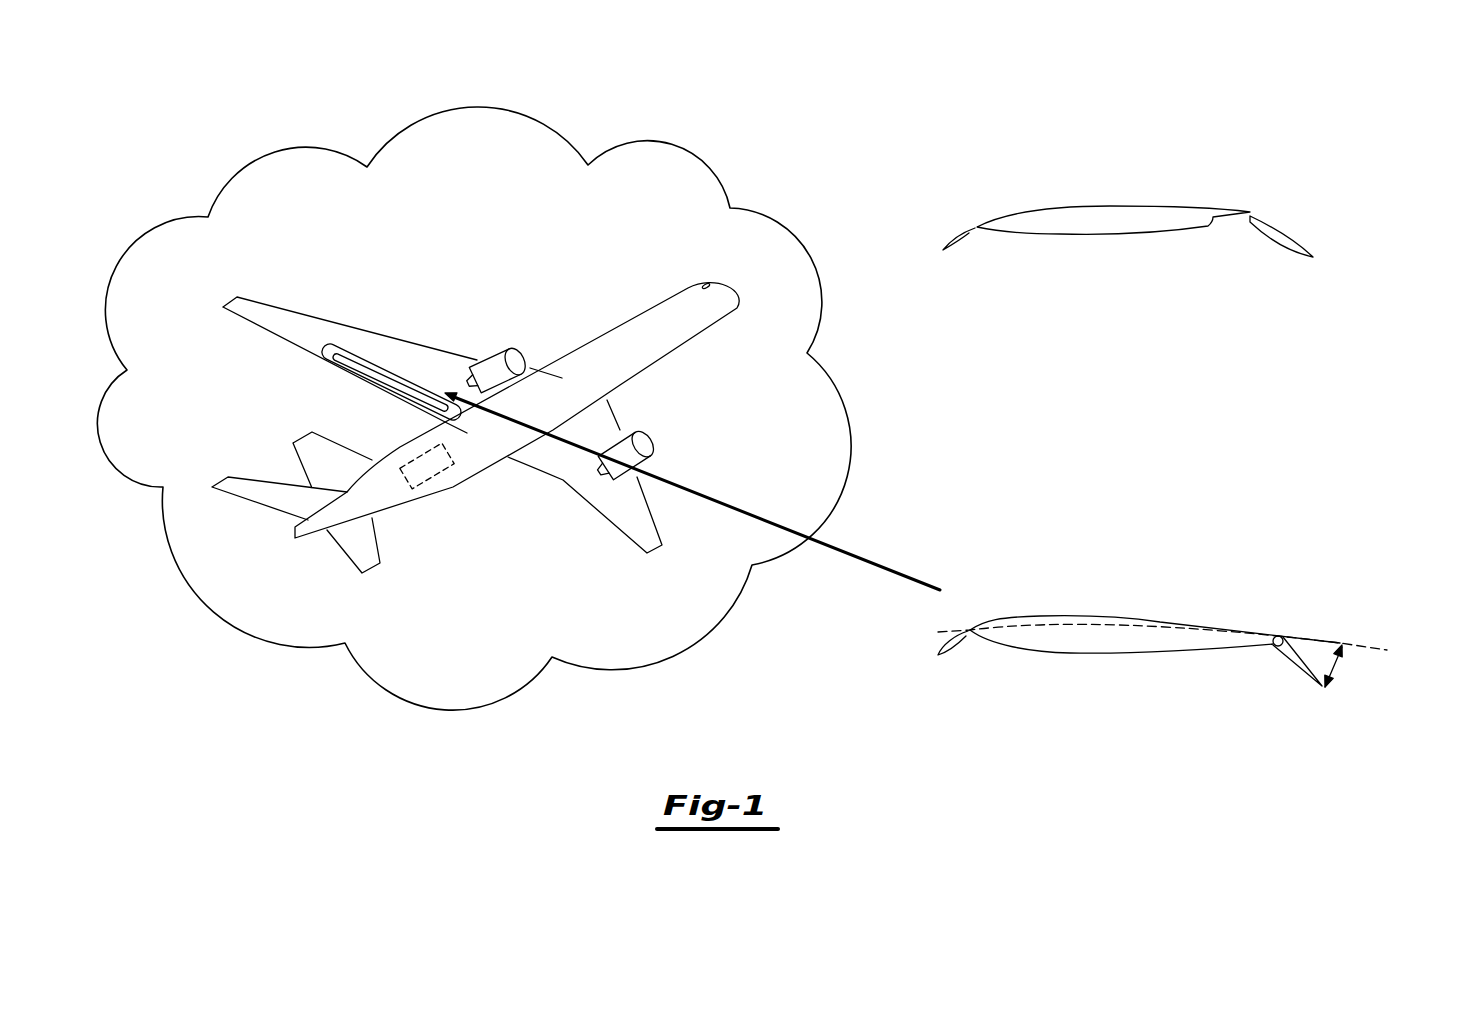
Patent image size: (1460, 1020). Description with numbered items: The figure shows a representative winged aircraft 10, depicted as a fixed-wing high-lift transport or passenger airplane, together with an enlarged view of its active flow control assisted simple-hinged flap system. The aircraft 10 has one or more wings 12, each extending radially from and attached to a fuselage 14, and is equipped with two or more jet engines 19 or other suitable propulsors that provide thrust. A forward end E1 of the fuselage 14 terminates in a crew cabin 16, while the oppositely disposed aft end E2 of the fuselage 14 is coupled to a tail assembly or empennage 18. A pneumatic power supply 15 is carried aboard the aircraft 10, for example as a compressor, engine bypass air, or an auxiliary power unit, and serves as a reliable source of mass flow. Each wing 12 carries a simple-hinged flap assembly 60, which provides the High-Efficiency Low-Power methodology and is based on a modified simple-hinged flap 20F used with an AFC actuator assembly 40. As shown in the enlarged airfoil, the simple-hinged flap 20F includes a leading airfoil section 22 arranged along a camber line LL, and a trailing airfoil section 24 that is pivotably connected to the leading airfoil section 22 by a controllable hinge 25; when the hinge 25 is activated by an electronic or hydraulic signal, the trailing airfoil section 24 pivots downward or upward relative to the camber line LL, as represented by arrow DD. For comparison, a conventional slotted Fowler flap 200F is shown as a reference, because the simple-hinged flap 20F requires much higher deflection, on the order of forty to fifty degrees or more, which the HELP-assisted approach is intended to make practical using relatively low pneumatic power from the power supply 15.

The winged aircraft 10 is at (479, 423).
The wing 12 is at (270, 320).
The fuselage 14 is at (638, 328).
The pneumatic power supply 15 is at (435, 482).
The crew cabin 16 is at (703, 320).
The tail assembly/empennage 18 is at (262, 448).
The jet engine 19 is at (497, 356).
The simple-hinged flap 20F is at (876, 589).
The leading airfoil section 22 is at (1018, 703).
The trailing airfoil section 24 is at (1273, 692).
The controllable hinge 25 is at (1286, 612).
The AFC actuator assembly 40 is at (427, 387).
The simple-hinged flap assembly 60 is at (387, 358).
The slotted Fowler flap 200F is at (1246, 128).
The forward end E1 is at (770, 288).
The aft end E2 is at (260, 545).
The camber line LL is at (1365, 643).
The arrow DD is at (1352, 668).